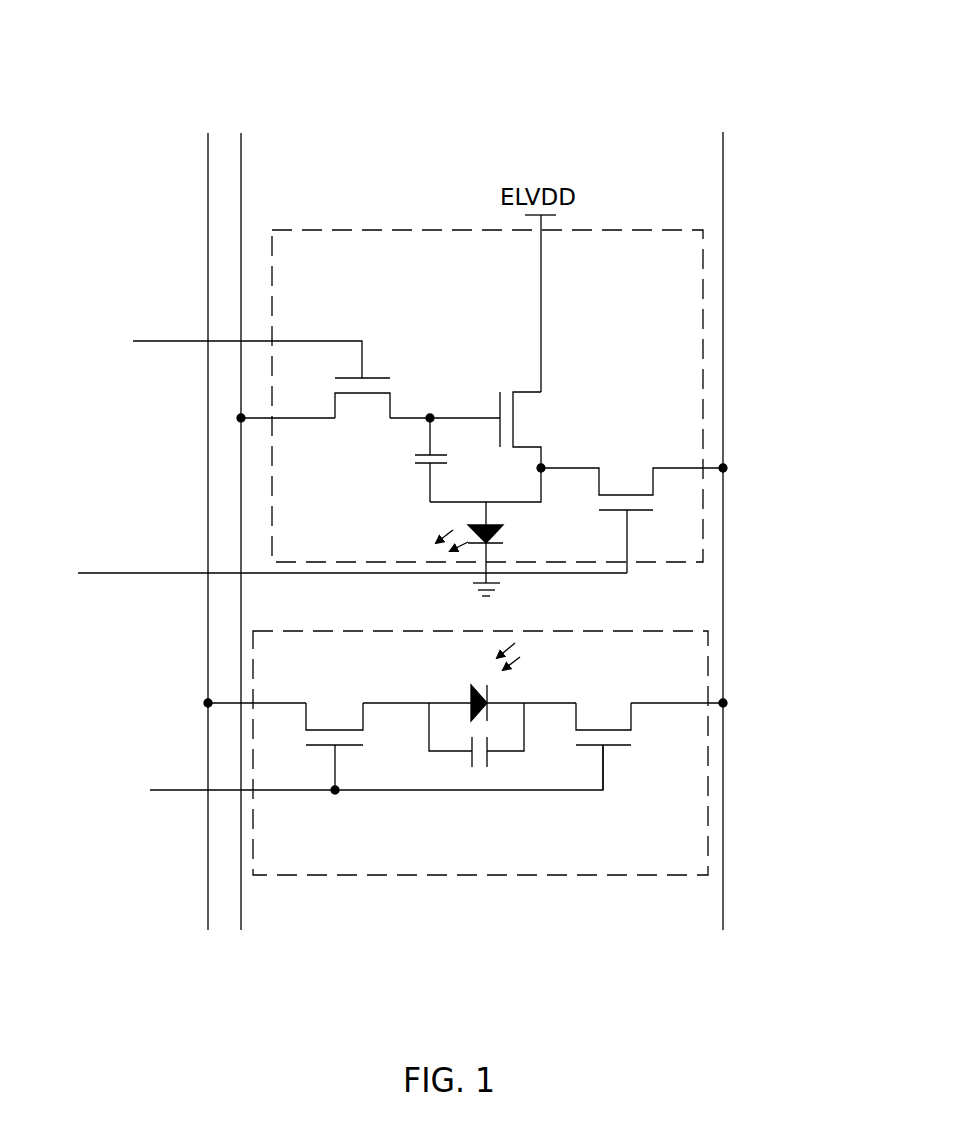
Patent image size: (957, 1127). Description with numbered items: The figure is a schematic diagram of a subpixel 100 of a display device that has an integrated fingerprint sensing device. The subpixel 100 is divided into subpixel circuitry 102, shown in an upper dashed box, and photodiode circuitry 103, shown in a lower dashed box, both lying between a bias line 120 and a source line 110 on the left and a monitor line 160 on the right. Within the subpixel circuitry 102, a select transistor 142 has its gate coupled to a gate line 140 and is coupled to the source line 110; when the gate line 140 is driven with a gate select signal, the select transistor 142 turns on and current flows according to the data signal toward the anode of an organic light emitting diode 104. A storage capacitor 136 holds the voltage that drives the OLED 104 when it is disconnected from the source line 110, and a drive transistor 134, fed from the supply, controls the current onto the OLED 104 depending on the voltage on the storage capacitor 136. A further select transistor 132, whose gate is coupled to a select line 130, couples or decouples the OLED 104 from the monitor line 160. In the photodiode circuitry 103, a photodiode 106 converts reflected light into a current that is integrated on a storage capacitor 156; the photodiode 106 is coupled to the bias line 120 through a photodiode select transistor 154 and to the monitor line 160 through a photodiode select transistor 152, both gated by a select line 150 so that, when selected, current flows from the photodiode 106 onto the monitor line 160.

The subpixel 100 is at (86, 28).
The subpixel circuitry 102 is at (357, 230).
The photodiode circuitry 103 is at (296, 631).
The organic light emitting diode (OLED) 104 is at (450, 530).
The photodiode 106 is at (468, 700).
The source line 110 is at (242, 138).
The bias line 120 is at (207, 148).
The select line 130 is at (331, 573).
The select transistor 132 is at (637, 514).
The drive transistor 134 is at (542, 409).
The storage capacitor 136 is at (414, 459).
The gate line 140 is at (222, 353).
The select transistor 142 is at (383, 373).
The select line 150 is at (352, 774).
The photodiode select transistor 152 is at (617, 752).
The photodiode select transistor 154 is at (350, 753).
The storage capacitor 156 is at (480, 763).
The monitor line 160 is at (724, 148).